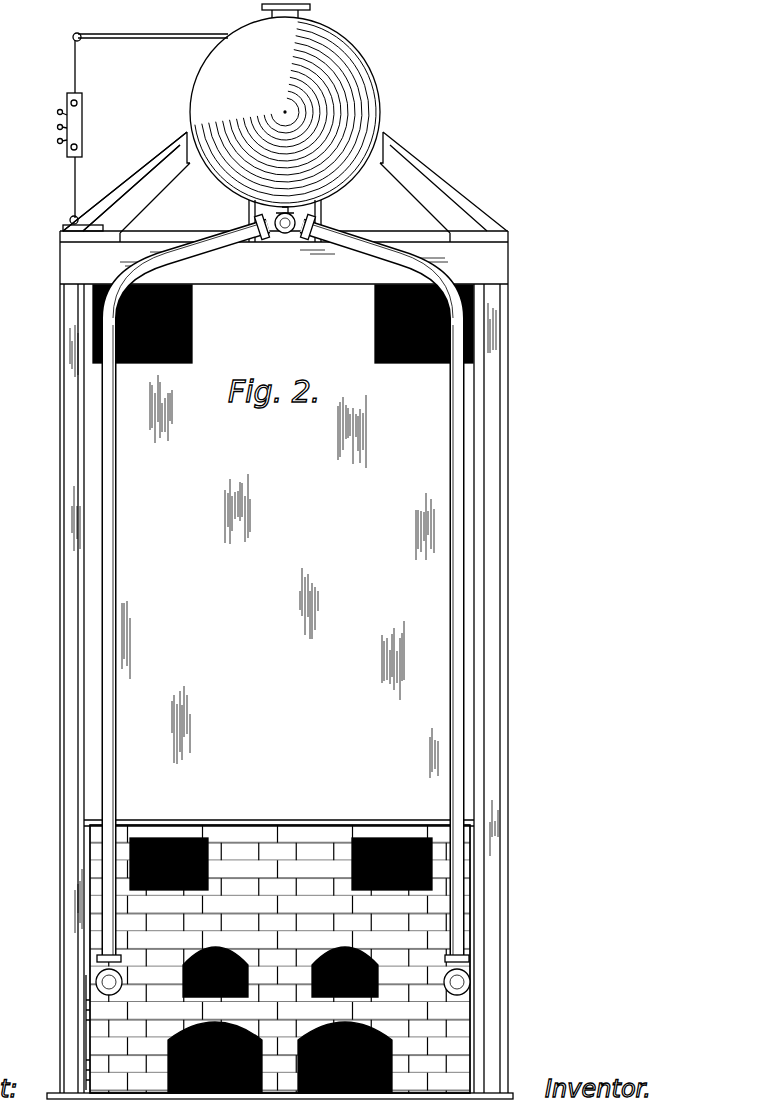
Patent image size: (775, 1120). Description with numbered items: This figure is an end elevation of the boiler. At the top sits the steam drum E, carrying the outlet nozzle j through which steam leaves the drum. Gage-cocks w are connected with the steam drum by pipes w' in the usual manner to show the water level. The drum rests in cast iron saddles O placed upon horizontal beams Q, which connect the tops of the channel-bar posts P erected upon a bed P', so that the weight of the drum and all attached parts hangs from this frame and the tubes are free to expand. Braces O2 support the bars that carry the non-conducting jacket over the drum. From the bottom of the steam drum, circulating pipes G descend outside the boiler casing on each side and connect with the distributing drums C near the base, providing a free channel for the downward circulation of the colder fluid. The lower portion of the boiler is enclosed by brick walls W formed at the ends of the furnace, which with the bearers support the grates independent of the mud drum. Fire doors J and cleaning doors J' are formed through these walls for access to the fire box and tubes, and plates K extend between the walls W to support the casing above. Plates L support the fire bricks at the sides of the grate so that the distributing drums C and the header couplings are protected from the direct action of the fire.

The steam drum E is at (285, 112).
The outlet nozzle j is at (312, 7).
The gage-cocks w is at (55, 125).
The pipes w' is at (145, 120).
The cast iron saddles O is at (284, 208).
The braces O2 is at (140, 166).
The horizontal beams Q is at (200, 294).
The circulating pipes G is at (118, 512).
The channel-bar posts P is at (277, 662).
The bed P' is at (280, 1106).
The walls W is at (280, 959).
The plates K is at (476, 825).
The cleaning doors J' is at (281, 841).
The fire doors J is at (268, 1020).
The distributing drums C is at (96, 981).
The plates L is at (88, 998).